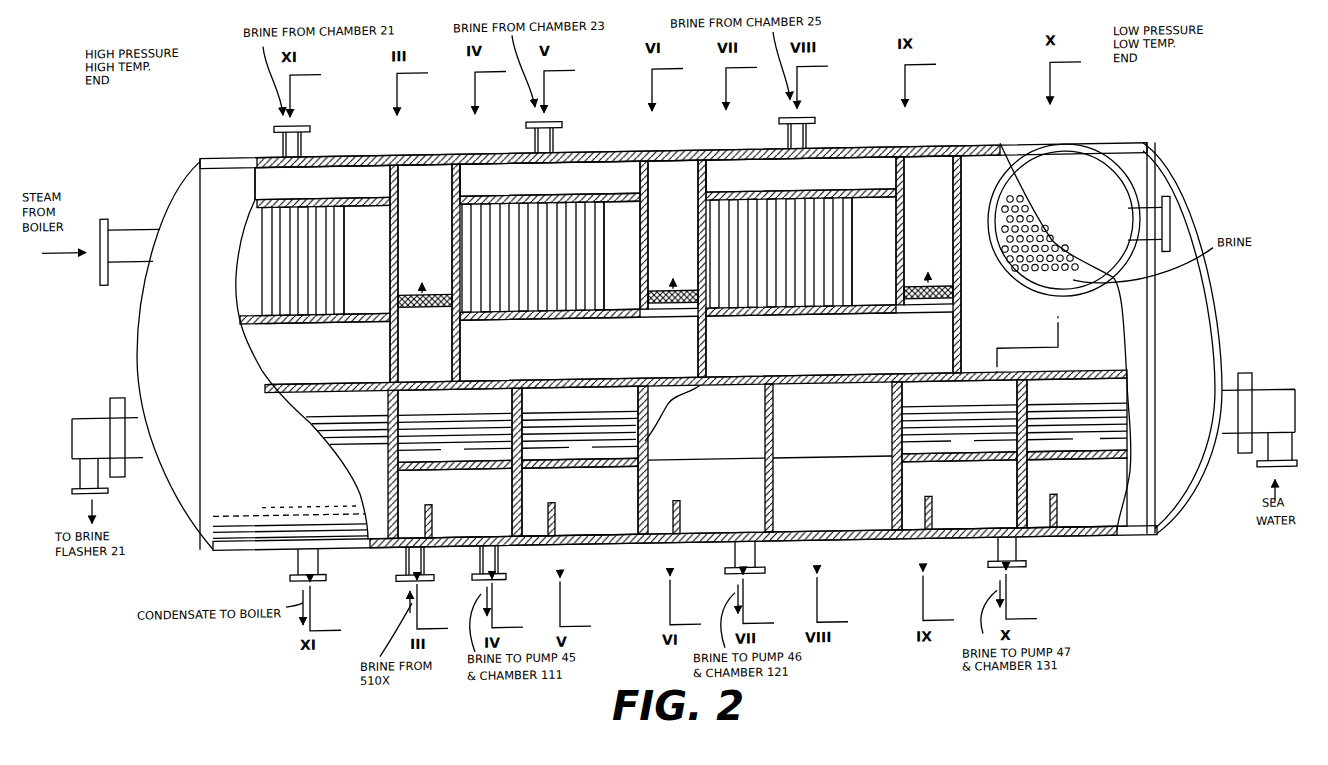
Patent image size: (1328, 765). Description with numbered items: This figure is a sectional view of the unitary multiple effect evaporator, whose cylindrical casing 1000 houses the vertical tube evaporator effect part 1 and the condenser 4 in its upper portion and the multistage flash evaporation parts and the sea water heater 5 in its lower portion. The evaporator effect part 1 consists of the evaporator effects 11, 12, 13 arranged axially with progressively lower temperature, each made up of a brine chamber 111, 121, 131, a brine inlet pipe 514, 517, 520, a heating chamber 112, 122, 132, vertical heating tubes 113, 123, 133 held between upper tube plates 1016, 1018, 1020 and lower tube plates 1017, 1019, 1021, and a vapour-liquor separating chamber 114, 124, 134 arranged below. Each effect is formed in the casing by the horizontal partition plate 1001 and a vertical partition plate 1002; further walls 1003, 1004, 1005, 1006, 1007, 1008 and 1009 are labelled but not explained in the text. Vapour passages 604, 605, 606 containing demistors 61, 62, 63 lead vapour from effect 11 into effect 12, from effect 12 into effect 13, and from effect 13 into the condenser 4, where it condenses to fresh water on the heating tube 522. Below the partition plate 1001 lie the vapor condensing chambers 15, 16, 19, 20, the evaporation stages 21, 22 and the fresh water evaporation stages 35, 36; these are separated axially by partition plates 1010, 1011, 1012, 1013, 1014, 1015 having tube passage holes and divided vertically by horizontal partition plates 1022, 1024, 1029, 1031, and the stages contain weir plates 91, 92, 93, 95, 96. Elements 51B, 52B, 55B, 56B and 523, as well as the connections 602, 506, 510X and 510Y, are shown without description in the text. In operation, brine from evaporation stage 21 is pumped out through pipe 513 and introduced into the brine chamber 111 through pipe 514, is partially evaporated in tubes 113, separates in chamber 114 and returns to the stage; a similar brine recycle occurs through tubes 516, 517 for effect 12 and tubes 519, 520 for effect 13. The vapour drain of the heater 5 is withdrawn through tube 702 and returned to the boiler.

The vertical tube type evaporator effect part 1 is at (222, 206).
The cylindrical casing 1000 is at (367, 162).
The horizontal partition plate 1001 is at (265, 382).
The vertical partition plate 1002 is at (452, 372).
The partition wall 1003 is at (698, 368).
The partition wall 1004 is at (953, 363).
The partition wall 1005 is at (398, 219).
The partition wall 1006 is at (648, 218).
The partition wall 1007 is at (905, 213).
The header wall 1008 is at (460, 201).
The header wall 1009 is at (707, 200).
The partition plate 1010 is at (399, 507).
The partition plate 1011 is at (523, 509).
The partition plate 1012 is at (650, 506).
The partition plate 1013 is at (774, 510).
The partition plate 1014 is at (903, 503).
The partition plate 1015 is at (1028, 507).
The upper tube plate 1016 is at (330, 206).
The lower tube plate 1017 is at (293, 330).
The upper tube plate 1018 is at (582, 202).
The lower tube plate 1019 is at (488, 330).
The upper tube plate 1020 is at (838, 204).
The lower tube plate 1021 is at (742, 334).
The horizontal partition plate 1022 is at (485, 478).
The horizontal partition plate 1024 is at (572, 478).
The horizontal partition plate 1029 is at (957, 478).
The horizontal partition plate 1031 is at (1073, 477).
The evaporator effect 11 is at (303, 273).
The brine chamber 111 is at (303, 195).
The heating chamber 112 is at (384, 293).
The vertical heating tubes 113 is at (350, 256).
The vapour-liquor separating chamber 114 is at (352, 369).
The evaporator effect 12 is at (534, 267).
The brine chamber 121 is at (560, 191).
The heating chamber 122 is at (631, 294).
The vertical heating tubes 123 is at (604, 255).
The vapour-liquor separating chamber 124 is at (596, 368).
The evaporator effect 13 is at (793, 268).
The brine chamber 131 is at (811, 195).
The heating chamber 132 is at (882, 289).
The vertical heating tubes 133 is at (852, 247).
The vapour-liquor separating chamber 134 is at (829, 369).
The condenser 4 is at (999, 335).
The sea water heater 5 is at (325, 502).
The vapor condensing chamber 15 is at (461, 465).
The vapor condensing chamber 16 is at (589, 465).
The vapor condensing chamber 19 is at (971, 465).
The vapor condensing chamber 20 is at (1096, 465).
The evaporation stage 21 is at (491, 530).
The evaporation stage 22 is at (620, 530).
The fresh water evaporation stage 35 is at (998, 527).
The fresh water evaporation stage 36 is at (1108, 525).
The tray baffle 51B is at (446, 422).
The tray baffle 52B is at (573, 422).
The tray baffle 55B is at (952, 420).
The tray baffle 56B is at (1062, 419).
The heater tubes 523 is at (328, 423).
The heating tube 522 is at (1068, 289).
The demistor 61 is at (422, 317).
The demistor 62 is at (670, 318).
The demistor 63 is at (923, 316).
The vapour passage 604 is at (437, 254).
The vapour passage 605 is at (687, 256).
The vapour passage 606 is at (943, 256).
The steam inlet nozzle 602 is at (128, 234).
The sea water inlet 506 is at (1259, 426).
The brine outlet 510X is at (103, 493).
The brine inlet nozzle 510Y is at (405, 568).
The pipe 513 is at (499, 570).
The brine inlet pipe 514 is at (282, 150).
The tube 516 is at (756, 566).
The brine inlet pipe 517 is at (558, 149).
The tube 519 is at (1016, 570).
The brine inlet pipe 520 is at (812, 149).
The tube 702 is at (297, 572).
The weir plate 91 is at (433, 546).
The weir plate 92 is at (556, 535).
The weir plate 93 is at (681, 535).
The weir plate 95 is at (933, 535).
The weir plate 96 is at (1058, 535).